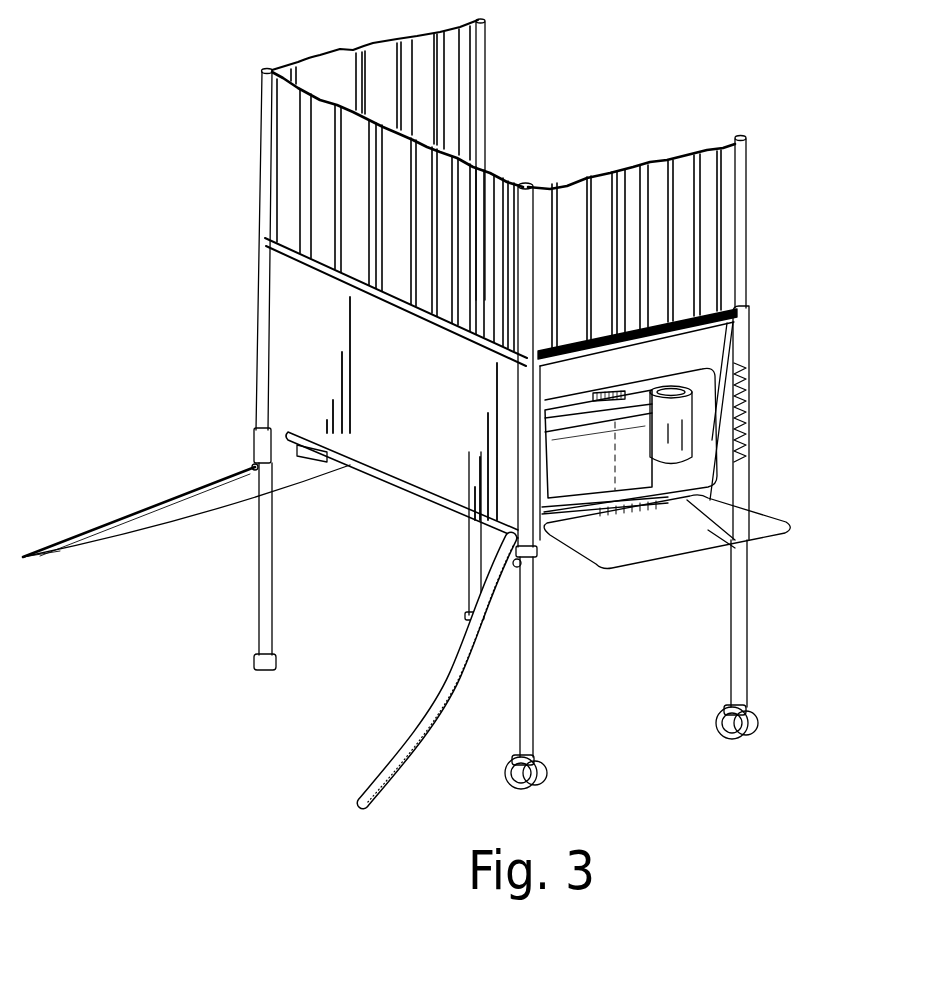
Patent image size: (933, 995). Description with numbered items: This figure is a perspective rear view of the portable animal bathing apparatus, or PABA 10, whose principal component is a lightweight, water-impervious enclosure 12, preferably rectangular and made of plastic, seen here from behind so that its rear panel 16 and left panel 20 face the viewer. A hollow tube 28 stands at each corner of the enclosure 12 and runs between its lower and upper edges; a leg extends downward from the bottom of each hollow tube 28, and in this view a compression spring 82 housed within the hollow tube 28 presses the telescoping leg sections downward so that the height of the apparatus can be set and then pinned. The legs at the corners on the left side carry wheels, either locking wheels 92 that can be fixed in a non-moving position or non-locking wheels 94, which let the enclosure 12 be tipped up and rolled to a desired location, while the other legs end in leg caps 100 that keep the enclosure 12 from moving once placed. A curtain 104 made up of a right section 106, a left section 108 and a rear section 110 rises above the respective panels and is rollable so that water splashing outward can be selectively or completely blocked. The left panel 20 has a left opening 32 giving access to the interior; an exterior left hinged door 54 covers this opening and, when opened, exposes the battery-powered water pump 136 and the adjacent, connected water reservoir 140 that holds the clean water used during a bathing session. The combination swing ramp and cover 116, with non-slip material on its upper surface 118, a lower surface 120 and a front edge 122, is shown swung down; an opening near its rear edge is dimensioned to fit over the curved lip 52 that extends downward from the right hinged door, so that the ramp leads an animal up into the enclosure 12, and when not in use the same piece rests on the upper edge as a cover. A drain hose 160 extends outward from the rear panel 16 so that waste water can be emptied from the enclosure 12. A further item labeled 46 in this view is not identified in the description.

The PABA 10 is at (790, 96).
The enclosure 12 is at (433, 302).
The rear panel 16 is at (325, 333).
The left panel 20 is at (682, 348).
The hollow tube 28 is at (740, 325).
The left opening 32 is at (705, 412).
The lower frame member 46 is at (310, 513).
The curved lip 52 is at (273, 242).
The exterior left hinged door 54 is at (745, 523).
The compression spring 82 is at (747, 377).
The locking wheels 92 is at (686, 673).
The non-locking wheels 94 is at (752, 720).
The leg caps 100 is at (255, 672).
The curtain 104 is at (486, 113).
The right section 106 is at (343, 53).
The left section 108 is at (707, 214).
The rear section 110 is at (325, 172).
The combination swing ramp and cover 116 is at (145, 479).
The upper surface 118 is at (152, 500).
The lower surface 120 is at (212, 493).
The front edge 122 is at (165, 530).
The water pump 136 is at (682, 428).
The water reservoir 140 is at (632, 447).
The drain hose 160 is at (442, 703).